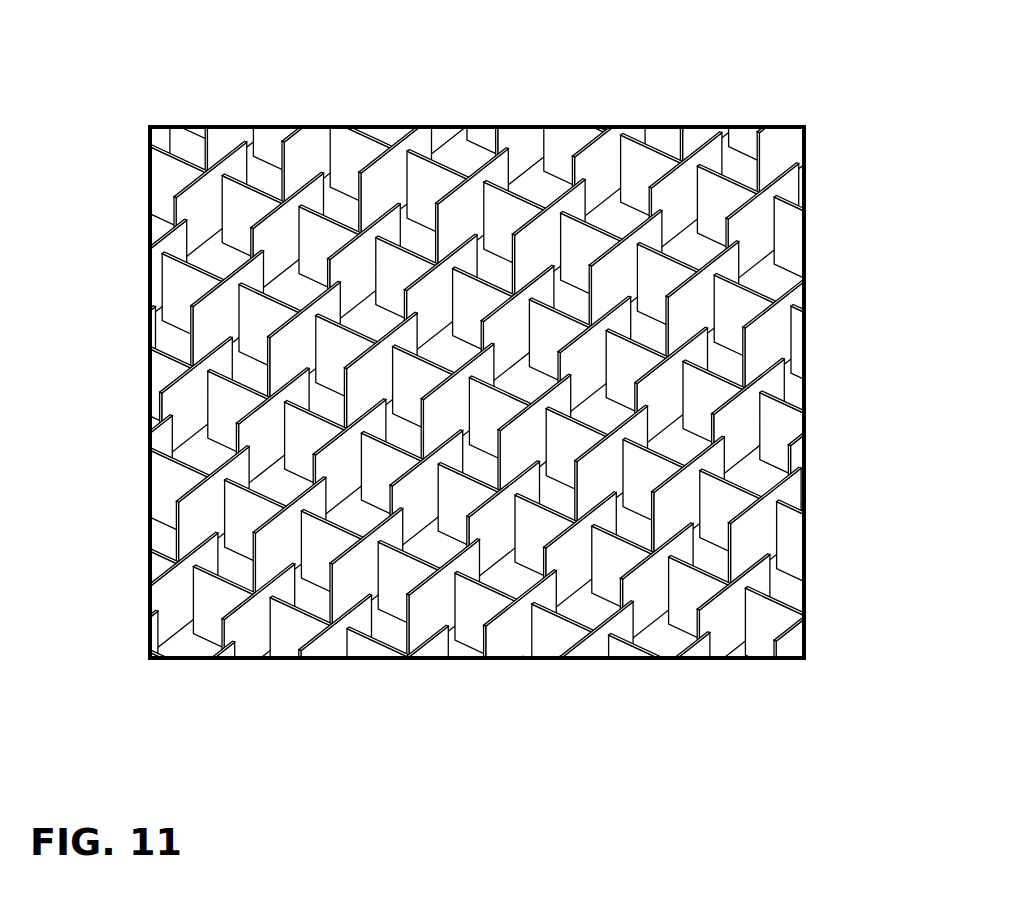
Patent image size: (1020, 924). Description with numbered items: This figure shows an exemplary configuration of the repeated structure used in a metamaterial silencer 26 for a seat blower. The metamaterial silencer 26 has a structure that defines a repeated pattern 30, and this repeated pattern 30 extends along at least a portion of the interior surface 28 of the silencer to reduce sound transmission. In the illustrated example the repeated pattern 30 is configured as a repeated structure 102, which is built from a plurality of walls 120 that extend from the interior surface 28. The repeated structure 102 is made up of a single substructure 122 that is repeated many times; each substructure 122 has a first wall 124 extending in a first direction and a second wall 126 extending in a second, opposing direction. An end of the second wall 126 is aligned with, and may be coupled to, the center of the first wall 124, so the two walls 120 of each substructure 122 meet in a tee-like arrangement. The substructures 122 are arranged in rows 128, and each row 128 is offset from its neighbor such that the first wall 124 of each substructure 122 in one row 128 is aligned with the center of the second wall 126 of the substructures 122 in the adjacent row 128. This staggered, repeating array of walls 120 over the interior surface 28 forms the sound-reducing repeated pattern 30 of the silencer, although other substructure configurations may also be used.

The metamaterial silencer 26 is at (653, 103).
The interior surface 28 is at (750, 470).
The repeated pattern 30 is at (311, 150).
The repeated structure 102 is at (178, 283).
The walls 120 is at (172, 486).
The substructure 122 is at (221, 588).
The first wall 124 is at (280, 556).
The second wall 126 is at (232, 506).
The rows 128 is at (812, 408).